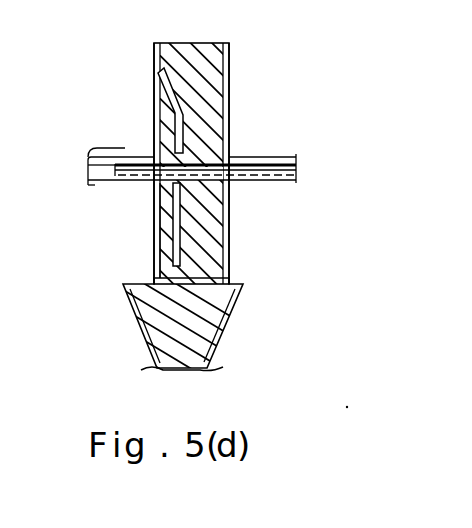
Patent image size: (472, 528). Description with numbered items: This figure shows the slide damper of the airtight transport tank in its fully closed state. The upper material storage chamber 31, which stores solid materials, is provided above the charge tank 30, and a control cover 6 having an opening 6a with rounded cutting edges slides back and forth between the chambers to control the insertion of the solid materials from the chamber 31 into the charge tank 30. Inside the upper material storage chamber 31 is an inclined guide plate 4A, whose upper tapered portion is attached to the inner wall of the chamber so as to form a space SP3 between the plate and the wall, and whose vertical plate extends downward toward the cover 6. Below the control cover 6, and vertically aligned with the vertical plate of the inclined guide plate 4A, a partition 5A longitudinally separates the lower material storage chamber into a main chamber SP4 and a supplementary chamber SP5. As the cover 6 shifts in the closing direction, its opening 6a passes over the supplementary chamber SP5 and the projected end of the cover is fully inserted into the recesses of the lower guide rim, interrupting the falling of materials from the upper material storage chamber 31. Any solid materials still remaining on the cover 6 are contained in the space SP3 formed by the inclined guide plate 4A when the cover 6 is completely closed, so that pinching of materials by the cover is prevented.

The upper material storage chamber 31 is at (154, 62).
The inclined guide plate 4A is at (155, 95).
The space SP3 is at (168, 123).
The main chamber SP4 is at (226, 215).
The partition 5A is at (165, 246).
The supplementary chamber SP5 is at (158, 209).
The control cover 6 is at (262, 181).
The opening 6a is at (91, 151).
The charge tank 30 is at (228, 334).